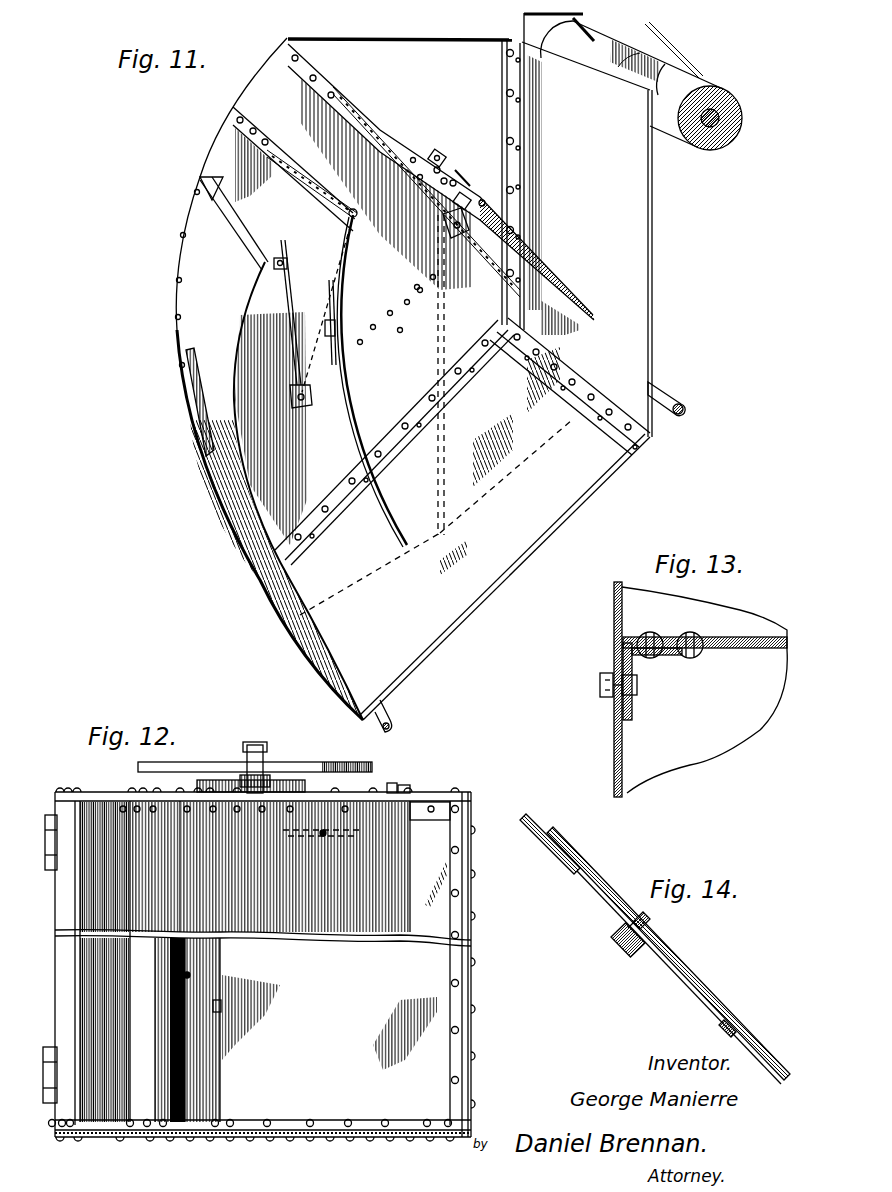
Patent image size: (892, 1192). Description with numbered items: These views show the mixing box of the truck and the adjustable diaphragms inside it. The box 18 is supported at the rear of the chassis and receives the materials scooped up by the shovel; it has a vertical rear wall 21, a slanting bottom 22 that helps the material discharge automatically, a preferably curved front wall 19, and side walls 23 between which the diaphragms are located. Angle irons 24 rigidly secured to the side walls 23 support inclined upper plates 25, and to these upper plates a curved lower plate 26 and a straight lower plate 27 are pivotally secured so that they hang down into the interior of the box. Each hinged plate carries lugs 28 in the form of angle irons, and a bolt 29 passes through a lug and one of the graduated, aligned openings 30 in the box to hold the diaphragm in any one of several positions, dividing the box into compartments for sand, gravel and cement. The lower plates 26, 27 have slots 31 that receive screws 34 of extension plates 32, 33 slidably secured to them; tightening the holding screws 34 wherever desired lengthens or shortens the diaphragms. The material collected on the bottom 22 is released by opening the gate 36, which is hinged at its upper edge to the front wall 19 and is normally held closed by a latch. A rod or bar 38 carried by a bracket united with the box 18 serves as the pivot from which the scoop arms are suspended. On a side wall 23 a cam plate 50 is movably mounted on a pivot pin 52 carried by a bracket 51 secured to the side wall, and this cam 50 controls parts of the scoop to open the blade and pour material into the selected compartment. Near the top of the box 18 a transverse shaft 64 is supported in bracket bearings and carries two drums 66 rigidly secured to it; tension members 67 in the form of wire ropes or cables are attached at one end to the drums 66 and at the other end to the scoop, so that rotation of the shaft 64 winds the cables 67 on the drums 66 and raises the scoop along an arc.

In FIG. 11, the box 18 is at (657, 283).
In FIG. 12, the box 18 is at (474, 946).
In FIG. 11, the front wall 19 is at (187, 295).
In FIG. 12, the front wall 19 is at (74, 952).
In FIG. 11, the rear wall 21 is at (653, 345).
In FIG. 12, the rear wall 21 is at (472, 975).
In FIG. 11, the bottom 22 is at (484, 604).
In FIG. 12, the bottom 22 is at (424, 1003).
In FIG. 11, the side walls 23 is at (352, 31).
In FIG. 12, the side walls 23 is at (102, 797).
In FIG. 13, the side walls 23 is at (618, 582).
In FIG. 11, the angle irons 24 is at (287, 63).
In FIG. 12, the angle irons 24 is at (133, 797).
In FIG. 11, the upper plates 25 is at (372, 100).
In FIG. 12, the upper plates 25 is at (222, 917).
In FIG. 11, the lower plate 26 is at (351, 258).
In FIG. 13, the lower plate 26 is at (733, 637).
In FIG. 11, the lower plate 27 is at (442, 183).
In FIG. 14, the lower plate 27 is at (539, 840).
In FIG. 11, the lugs 28 is at (450, 232).
In FIG. 13, the lugs 28 is at (638, 657).
In FIG. 11, the bolt 29 is at (458, 232).
In FIG. 12, the bolt 29 is at (418, 780).
In FIG. 13, the bolt 29 is at (600, 687).
In FIG. 11, the openings 30 is at (393, 313).
In FIG. 11, the slots 31 is at (462, 186).
In FIG. 12, the slots 31 is at (385, 782).
In FIG. 14, the slots 31 is at (598, 895).
In FIG. 11, the extension plate 32 is at (392, 515).
In FIG. 12, the extension plate 32 is at (222, 1087).
In FIG. 11, the extension plate 33 is at (560, 280).
In FIG. 12, the extension plate 33 is at (388, 935).
In FIG. 14, the extension plate 33 is at (601, 893).
In FIG. 11, the screws 34 is at (437, 155).
In FIG. 12, the screws 34 is at (324, 830).
In FIG. 14, the screws 34 is at (620, 952).
In FIG. 11, the gate 36 is at (290, 633).
In FIG. 11, the rod or bar 38 is at (690, 407).
In FIG. 12, the cam plate 50 is at (303, 763).
In FIG. 12, the bracket 51 is at (211, 780).
In FIG. 12, the pivot pin 52 is at (258, 744).
In FIG. 11, the transverse shaft 64 is at (728, 115).
In FIG. 11, the drums 66 is at (627, 38).
In FIG. 11, the tension members 67 is at (598, 22).